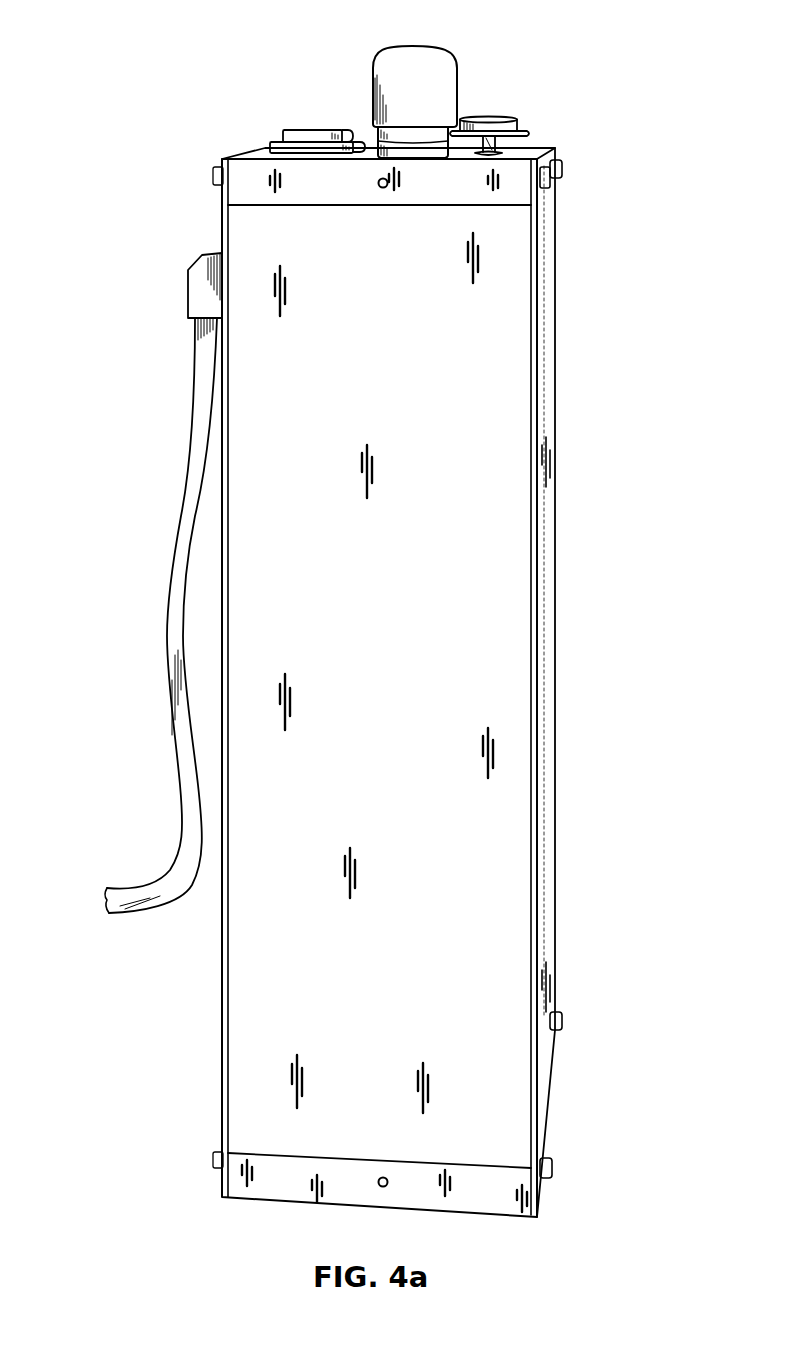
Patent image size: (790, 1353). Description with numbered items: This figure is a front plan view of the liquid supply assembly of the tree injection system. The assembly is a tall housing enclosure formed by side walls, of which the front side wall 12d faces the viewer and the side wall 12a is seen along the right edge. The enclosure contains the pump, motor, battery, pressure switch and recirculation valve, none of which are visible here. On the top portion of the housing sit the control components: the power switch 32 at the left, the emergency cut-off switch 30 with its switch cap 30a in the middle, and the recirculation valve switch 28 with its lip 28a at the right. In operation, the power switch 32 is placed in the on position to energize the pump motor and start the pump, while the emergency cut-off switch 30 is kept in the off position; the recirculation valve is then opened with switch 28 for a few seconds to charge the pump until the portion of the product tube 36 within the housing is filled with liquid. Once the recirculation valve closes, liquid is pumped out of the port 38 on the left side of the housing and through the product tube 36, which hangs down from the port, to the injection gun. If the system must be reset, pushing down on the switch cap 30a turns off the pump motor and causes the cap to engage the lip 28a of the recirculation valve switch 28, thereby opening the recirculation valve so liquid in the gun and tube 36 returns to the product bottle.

The side wall 12a is at (546, 570).
The side wall 12d is at (390, 633).
The recirculation valve switch 28 is at (498, 117).
The lip 28a is at (527, 132).
The emergency cut-off switch 30 is at (393, 50).
The switch cap 30a is at (402, 102).
The power switch 32 is at (315, 133).
The product tube 36 is at (171, 600).
The port 38 is at (200, 289).